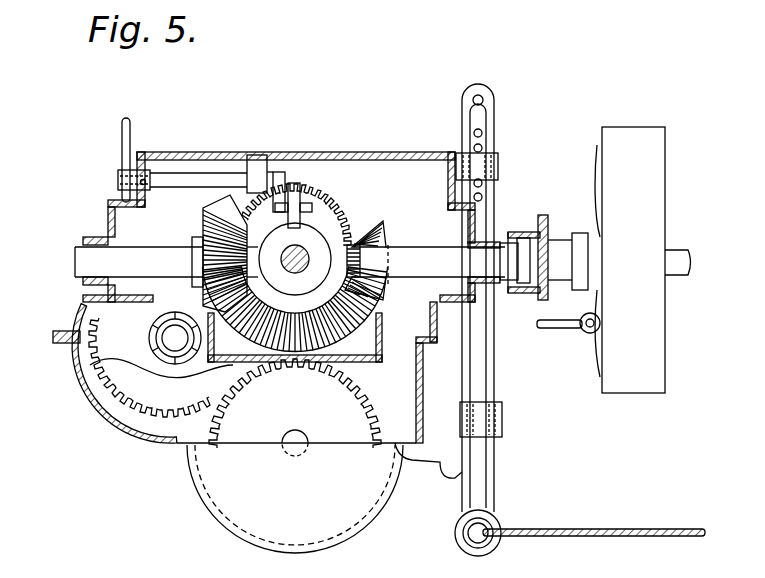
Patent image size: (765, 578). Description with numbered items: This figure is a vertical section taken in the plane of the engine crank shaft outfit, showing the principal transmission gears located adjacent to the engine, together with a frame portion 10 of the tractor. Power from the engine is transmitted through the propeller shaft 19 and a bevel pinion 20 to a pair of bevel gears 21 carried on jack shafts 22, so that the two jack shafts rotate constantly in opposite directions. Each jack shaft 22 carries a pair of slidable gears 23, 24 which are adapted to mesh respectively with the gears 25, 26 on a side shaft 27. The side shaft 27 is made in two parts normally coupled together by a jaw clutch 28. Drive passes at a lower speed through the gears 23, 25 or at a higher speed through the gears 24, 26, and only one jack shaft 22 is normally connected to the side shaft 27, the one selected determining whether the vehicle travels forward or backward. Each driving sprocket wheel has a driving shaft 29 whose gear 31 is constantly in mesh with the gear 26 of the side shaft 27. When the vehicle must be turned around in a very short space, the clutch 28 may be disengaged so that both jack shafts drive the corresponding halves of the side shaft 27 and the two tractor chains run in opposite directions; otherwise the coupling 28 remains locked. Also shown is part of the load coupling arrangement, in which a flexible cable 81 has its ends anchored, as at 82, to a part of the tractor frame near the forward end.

The casing 10 is at (408, 142).
The propeller shaft 19 is at (438, 230).
The bevel pinion 20 is at (198, 220).
The bevel gear 21 is at (373, 222).
The jack shaft 22 is at (305, 250).
The slidable gear 23 is at (327, 277).
The slidable gear 24 is at (312, 192).
The gear 25 is at (92, 350).
The gear 26 is at (123, 385).
The side shaft 27 is at (170, 338).
The jaw clutch 28 is at (168, 360).
The driving shaft 29 is at (298, 433).
The gear 31 is at (377, 403).
The flexible cable 81 is at (632, 537).
The anchorage 82 is at (480, 535).